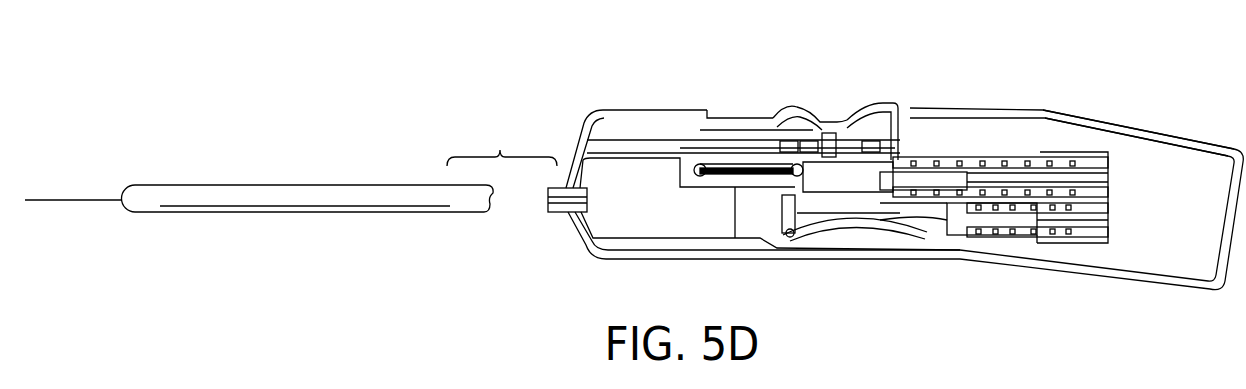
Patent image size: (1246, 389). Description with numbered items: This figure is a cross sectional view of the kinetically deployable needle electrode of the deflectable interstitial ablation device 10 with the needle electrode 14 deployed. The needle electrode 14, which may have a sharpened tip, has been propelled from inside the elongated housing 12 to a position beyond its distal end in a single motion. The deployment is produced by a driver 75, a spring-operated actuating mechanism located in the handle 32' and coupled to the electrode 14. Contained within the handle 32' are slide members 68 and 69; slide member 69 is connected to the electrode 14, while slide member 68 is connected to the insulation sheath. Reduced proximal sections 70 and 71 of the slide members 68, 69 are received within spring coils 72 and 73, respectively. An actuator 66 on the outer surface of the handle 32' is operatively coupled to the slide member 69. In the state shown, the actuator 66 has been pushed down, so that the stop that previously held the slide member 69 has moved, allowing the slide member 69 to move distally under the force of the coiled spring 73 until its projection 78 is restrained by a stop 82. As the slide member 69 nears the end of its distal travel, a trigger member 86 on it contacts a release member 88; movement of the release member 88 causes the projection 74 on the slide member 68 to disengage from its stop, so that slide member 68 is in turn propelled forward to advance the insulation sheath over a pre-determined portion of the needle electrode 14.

The deflectable interstitial ablation device 10 is at (1034, 60).
The elongated housing 12 is at (300, 184).
The needle electrode 14 is at (87, 198).
The handle 32' is at (1144, 123).
The actuator 66 is at (792, 110).
The slide member 68 is at (953, 230).
The slide member 69 is at (878, 189).
The reduced proximal section 70 is at (996, 228).
The reduced proximal section 71 is at (962, 178).
The spring coil 72 is at (1036, 233).
The spring coil 73 is at (1068, 160).
The projection 74 is at (855, 226).
The driver 75 is at (1112, 220).
The projection 78 is at (836, 157).
The stop 82 is at (828, 150).
The trigger member 86 is at (783, 168).
The release member 88 is at (784, 232).